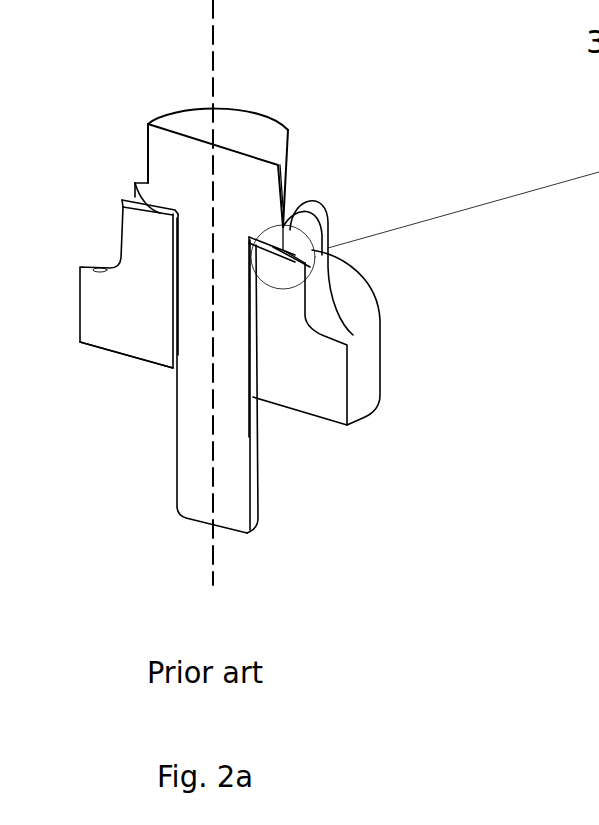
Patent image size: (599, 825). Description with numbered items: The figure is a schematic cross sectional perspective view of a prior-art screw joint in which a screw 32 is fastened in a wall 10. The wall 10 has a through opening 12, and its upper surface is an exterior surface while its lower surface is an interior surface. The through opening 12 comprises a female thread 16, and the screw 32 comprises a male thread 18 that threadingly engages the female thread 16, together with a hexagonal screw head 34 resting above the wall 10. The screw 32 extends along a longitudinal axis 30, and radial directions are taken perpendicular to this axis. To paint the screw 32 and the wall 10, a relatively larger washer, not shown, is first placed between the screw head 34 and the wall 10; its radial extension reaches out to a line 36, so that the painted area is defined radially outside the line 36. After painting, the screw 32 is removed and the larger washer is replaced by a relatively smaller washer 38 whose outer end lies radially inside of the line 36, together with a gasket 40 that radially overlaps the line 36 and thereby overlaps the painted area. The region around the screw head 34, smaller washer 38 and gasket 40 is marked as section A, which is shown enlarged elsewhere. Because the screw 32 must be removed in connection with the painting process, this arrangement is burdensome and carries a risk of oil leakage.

The wall 10 is at (112, 313).
The through opening 12 is at (250, 360).
The female thread 16 is at (172, 325).
The male thread 18 is at (177, 405).
The longitudinal axis 30 is at (220, 548).
The screw 32 is at (195, 127).
The hexagonal screw head 34 is at (252, 138).
The line 36 is at (285, 303).
The smaller washer 38 is at (140, 183).
The gasket 40 is at (123, 203).
The section A is at (293, 237).